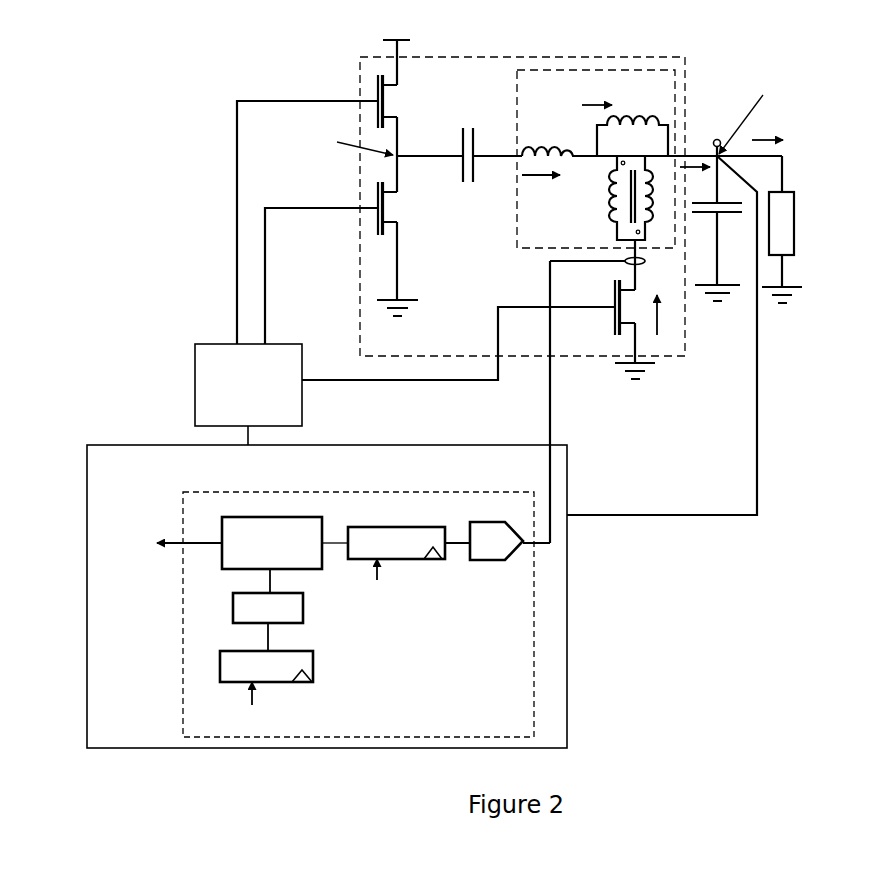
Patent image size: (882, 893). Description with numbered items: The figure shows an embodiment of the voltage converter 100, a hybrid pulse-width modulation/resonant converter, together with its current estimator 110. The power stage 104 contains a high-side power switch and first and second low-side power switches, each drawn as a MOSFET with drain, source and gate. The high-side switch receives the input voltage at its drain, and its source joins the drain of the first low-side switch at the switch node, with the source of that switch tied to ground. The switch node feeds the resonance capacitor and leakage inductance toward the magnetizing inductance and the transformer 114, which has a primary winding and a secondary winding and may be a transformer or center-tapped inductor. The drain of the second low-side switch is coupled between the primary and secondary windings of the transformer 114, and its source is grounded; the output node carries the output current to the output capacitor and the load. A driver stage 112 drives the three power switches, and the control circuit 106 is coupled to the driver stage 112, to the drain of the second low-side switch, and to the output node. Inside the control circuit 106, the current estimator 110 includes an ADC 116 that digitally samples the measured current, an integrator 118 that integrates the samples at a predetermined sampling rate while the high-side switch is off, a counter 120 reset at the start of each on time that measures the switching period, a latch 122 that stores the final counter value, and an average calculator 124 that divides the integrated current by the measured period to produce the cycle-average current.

The voltage converter 100 is at (112, 103).
The power stage 104 is at (685, 65).
The control circuit 106 is at (327, 596).
The current estimator 110 is at (332, 614).
The driver stage 112 is at (248, 394).
The transformer 114 is at (516, 200).
The ADC 116 is at (492, 560).
The integrator 118 is at (398, 559).
The counter 120 is at (223, 682).
The latch 122 is at (232, 608).
The average calculator 124 is at (313, 569).